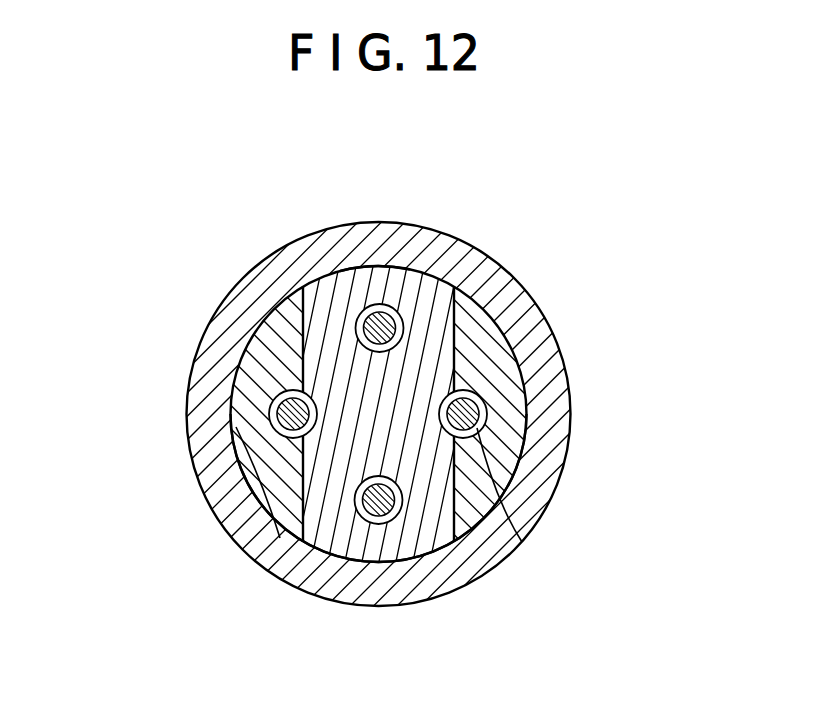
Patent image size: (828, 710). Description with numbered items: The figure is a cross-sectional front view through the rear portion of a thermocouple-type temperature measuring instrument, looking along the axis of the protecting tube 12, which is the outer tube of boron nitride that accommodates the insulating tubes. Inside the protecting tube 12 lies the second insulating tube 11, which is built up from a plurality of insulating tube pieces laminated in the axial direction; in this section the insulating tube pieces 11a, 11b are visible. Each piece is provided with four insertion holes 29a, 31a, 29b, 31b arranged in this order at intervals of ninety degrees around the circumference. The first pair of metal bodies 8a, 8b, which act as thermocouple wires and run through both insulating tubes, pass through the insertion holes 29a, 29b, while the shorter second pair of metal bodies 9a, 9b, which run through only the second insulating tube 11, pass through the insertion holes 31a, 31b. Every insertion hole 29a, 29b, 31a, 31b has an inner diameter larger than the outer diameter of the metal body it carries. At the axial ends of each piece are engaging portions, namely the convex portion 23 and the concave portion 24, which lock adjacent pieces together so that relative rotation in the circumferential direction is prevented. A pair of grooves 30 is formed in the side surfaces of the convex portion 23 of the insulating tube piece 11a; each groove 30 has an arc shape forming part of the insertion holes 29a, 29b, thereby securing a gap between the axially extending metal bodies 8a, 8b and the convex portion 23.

The metal body 8a is at (553, 416).
The metal body 8b is at (195, 402).
The metal body 9a is at (349, 258).
The metal body 9b is at (312, 579).
The second insulating tube 11 is at (404, 361).
The insulating tube piece 11a is at (372, 280).
The insulating tube piece 11b is at (503, 458).
The protecting tube 12 is at (563, 349).
The convex portion 23 is at (495, 325).
The concave portion 24 is at (455, 540).
The insertion hole 29a is at (556, 403).
The insertion hole 29b is at (192, 390).
The groove 30 is at (272, 503).
The insertion hole 31a is at (443, 258).
The insertion hole 31b is at (409, 579).